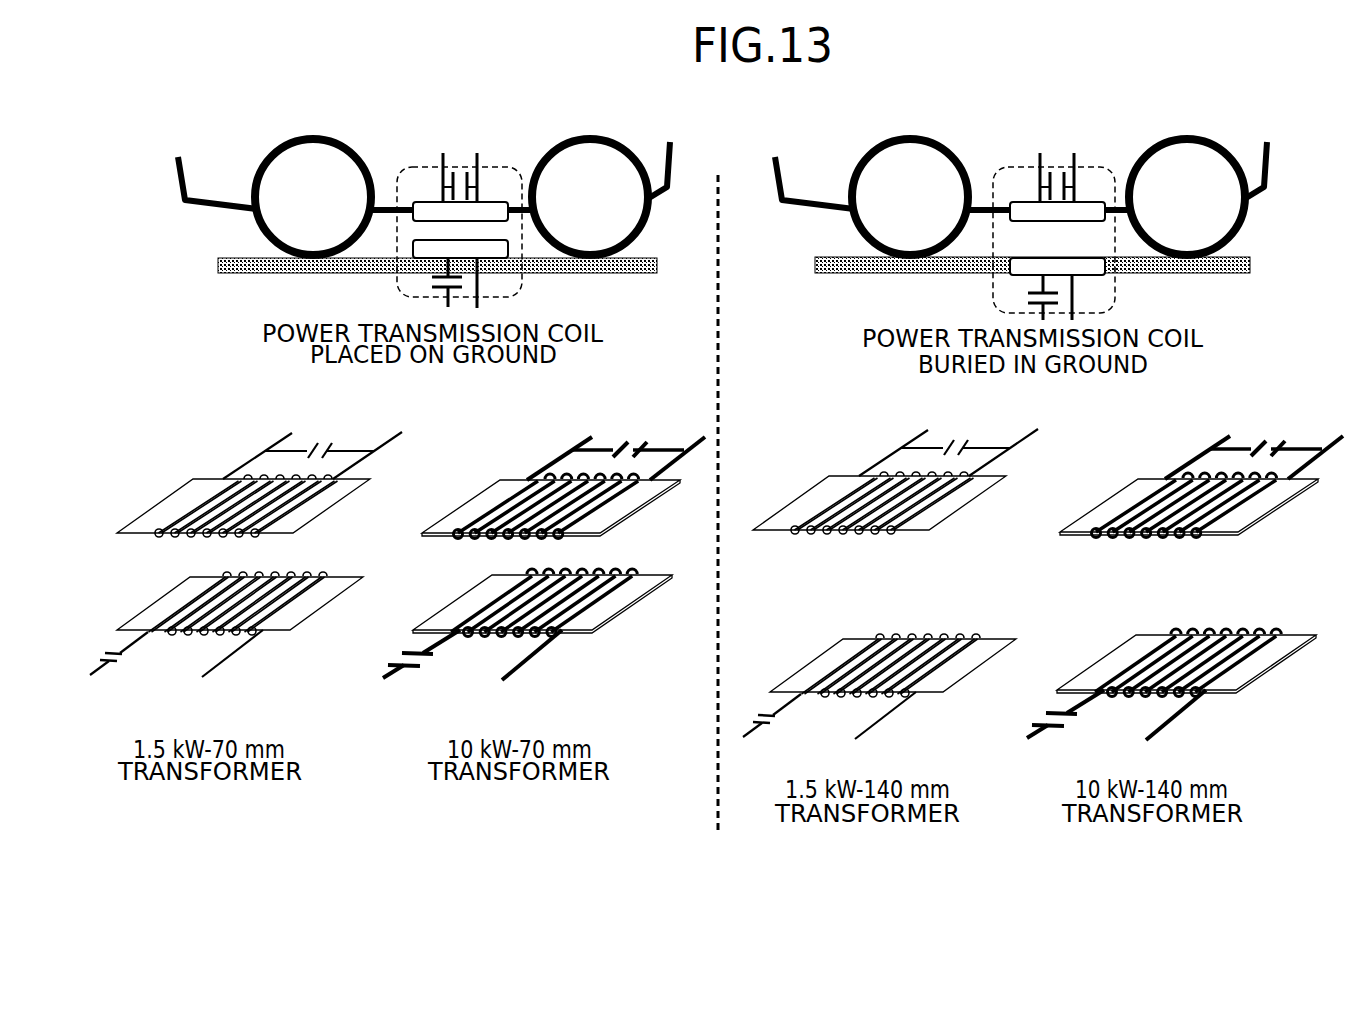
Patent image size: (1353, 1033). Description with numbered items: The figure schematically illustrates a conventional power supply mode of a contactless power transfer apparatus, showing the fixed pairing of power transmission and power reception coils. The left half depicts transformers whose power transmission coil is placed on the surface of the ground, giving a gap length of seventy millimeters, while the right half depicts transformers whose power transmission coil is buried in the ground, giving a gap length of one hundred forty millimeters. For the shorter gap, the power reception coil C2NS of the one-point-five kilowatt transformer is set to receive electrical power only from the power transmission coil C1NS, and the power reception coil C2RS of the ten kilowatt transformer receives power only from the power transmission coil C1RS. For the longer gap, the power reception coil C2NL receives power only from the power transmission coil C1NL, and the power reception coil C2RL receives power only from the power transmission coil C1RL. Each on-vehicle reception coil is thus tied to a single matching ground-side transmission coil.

The power reception coil C2NS is at (259, 467).
The power transmission coil C1NS is at (226, 641).
The power reception coil C2RS is at (563, 468).
The power transmission coil C1RS is at (527, 640).
The power reception coil C2NL is at (895, 463).
The power transmission coil C1NL is at (879, 701).
The power reception coil C2RL is at (1201, 466).
The power transmission coil C1RL is at (1171, 698).